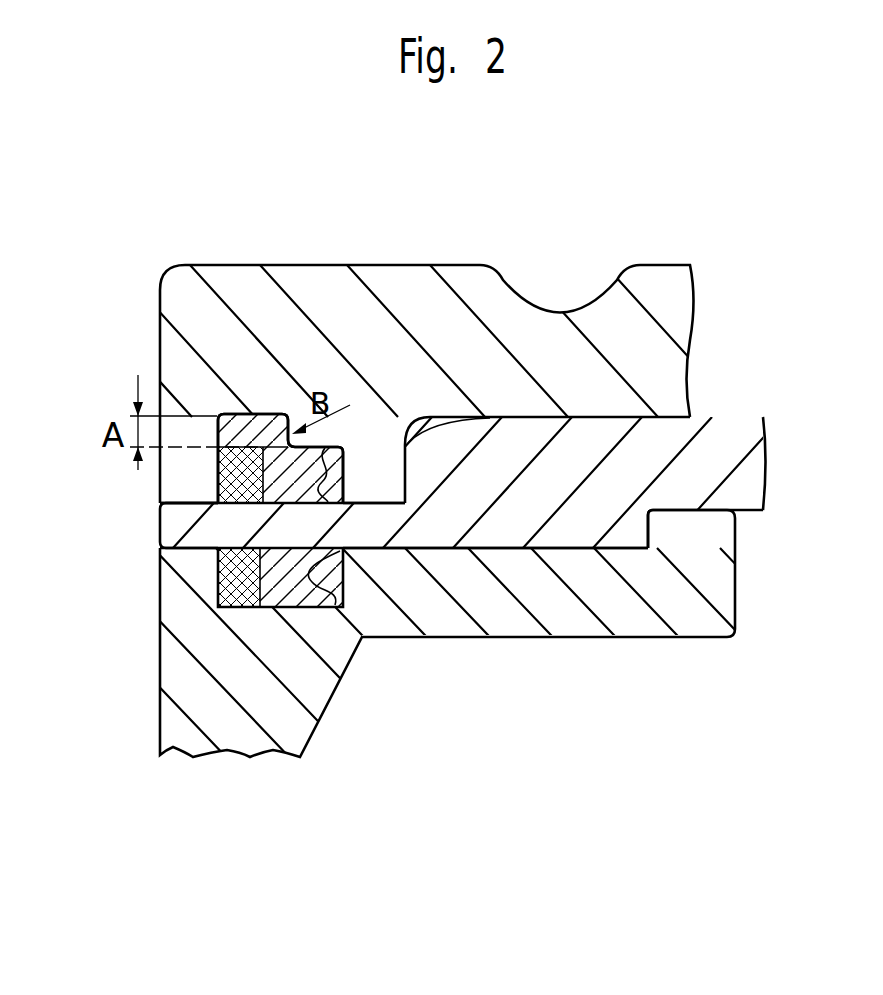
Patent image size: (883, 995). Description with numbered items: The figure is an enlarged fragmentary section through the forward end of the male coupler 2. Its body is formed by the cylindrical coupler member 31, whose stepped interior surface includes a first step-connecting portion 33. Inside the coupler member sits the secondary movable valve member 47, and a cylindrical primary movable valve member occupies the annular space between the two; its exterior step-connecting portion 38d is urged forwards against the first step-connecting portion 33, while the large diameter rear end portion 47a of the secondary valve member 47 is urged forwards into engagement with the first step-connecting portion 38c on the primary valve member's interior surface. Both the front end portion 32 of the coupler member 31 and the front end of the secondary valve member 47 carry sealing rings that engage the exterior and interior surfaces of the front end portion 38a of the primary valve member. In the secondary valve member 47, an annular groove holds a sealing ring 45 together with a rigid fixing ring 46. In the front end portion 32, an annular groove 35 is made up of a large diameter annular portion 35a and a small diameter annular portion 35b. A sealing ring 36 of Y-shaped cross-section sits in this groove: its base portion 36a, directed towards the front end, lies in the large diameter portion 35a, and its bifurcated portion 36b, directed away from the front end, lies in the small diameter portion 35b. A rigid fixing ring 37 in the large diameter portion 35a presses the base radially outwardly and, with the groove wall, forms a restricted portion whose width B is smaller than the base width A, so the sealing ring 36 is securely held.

The male coupler 2 is at (645, 236).
The cylindrical coupler member 31 is at (660, 290).
The front end portion 32 is at (333, 293).
The first step-connecting portion 33 is at (470, 417).
The annular groove 35 is at (243, 414).
The large diameter annular portion 35a is at (247, 452).
The small diameter annular portion 35b is at (352, 458).
The sealing ring 36 is at (221, 556).
The base portion 36a is at (270, 414).
The bifurcated portion 36b is at (343, 445).
The rigid fixing ring 37 is at (160, 503).
The front end portion 38a is at (178, 524).
The first step-connecting portion 38c is at (662, 522).
The step-connecting portion 38d is at (414, 420).
The sealing ring 45 is at (318, 610).
The rigid fixing ring 46 is at (218, 610).
The secondary movable valve member 47 is at (578, 613).
The large diameter rear end portion 47a is at (712, 550).